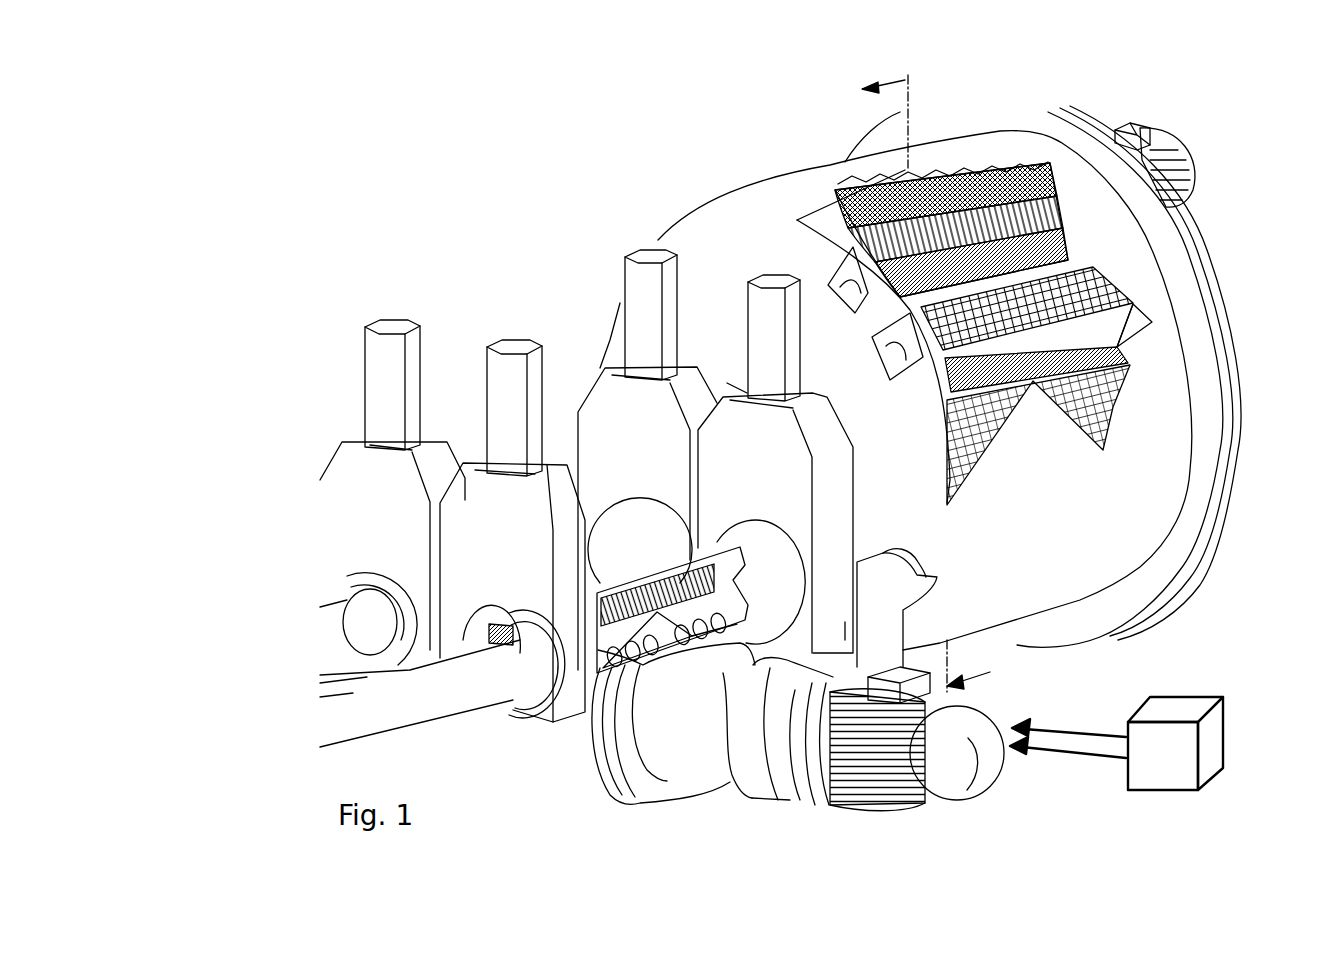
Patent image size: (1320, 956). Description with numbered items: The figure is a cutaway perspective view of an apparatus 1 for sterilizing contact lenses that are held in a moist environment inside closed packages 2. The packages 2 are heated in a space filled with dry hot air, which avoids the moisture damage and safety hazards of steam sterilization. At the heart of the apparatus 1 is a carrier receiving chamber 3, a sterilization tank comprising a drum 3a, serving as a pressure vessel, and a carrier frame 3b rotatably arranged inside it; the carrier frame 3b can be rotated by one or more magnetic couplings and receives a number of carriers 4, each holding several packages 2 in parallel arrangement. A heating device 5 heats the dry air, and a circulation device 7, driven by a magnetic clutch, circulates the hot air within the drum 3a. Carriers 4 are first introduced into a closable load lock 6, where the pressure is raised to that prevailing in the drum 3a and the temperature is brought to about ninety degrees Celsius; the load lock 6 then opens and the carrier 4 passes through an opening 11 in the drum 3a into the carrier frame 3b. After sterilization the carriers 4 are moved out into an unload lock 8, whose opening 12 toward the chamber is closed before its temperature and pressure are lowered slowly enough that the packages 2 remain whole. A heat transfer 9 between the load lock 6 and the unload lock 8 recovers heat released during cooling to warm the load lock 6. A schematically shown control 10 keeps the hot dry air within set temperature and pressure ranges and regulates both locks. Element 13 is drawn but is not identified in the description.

The apparatus 1 is at (716, 128).
The package 2 is at (1085, 287).
The carrier receiving chamber 3 is at (937, 150).
The drum 3a is at (992, 148).
The carrier frame 3b is at (1086, 254).
The carrier 4 is at (1087, 413).
The heating device 5 is at (749, 764).
The load lock 6 is at (604, 528).
The circulation device 7 is at (865, 630).
The unload lock 8 is at (659, 640).
The heat transfer 9 is at (611, 562).
The control 10 is at (1149, 766).
The opening 11 is at (620, 493).
The opening 12 is at (754, 520).
The shaft 13 is at (327, 653).